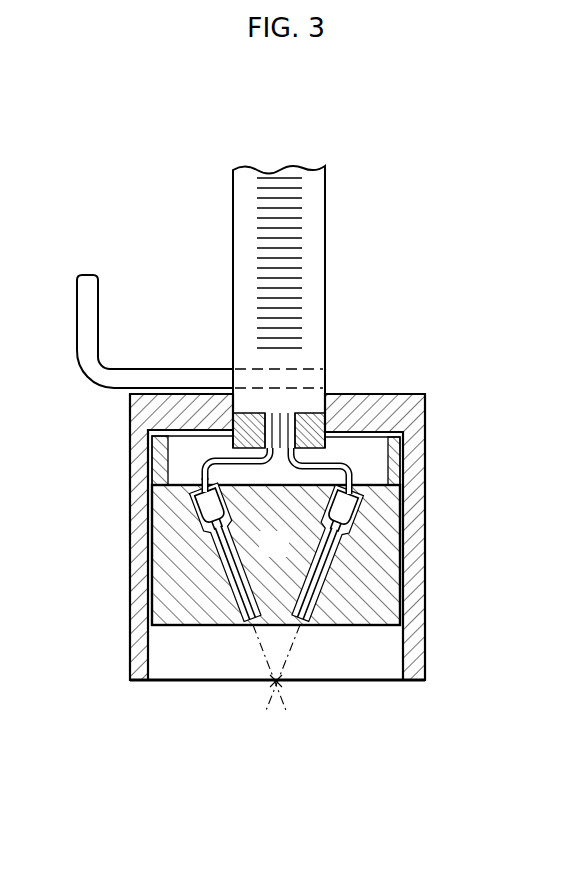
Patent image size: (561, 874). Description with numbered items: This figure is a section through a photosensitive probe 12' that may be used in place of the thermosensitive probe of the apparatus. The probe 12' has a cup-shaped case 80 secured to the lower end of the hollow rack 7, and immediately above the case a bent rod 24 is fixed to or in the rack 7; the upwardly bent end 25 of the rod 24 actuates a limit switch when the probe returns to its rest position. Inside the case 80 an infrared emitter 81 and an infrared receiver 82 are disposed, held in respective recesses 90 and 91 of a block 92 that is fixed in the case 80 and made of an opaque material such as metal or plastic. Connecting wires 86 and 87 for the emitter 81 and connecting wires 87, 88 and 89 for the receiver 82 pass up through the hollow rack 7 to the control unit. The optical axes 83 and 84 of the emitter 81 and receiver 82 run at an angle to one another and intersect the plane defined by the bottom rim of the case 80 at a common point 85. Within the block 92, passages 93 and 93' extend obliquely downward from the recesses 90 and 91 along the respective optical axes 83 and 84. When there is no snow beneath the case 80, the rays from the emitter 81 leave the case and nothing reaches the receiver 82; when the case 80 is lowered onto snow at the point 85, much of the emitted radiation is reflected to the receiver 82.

The rack 7 is at (313, 235).
The bent rod 24 is at (88, 378).
The upwardly bent end 25 is at (83, 309).
The probe 12' is at (308, 548).
The cup-shaped case 80 is at (416, 607).
The infrared emitter 81 is at (214, 511).
The infrared receiver 82 is at (356, 512).
The optical axis 83 is at (228, 577).
The optical axis 84 is at (292, 641).
The common point 85 is at (273, 684).
The connecting wire 86 is at (158, 460).
The connecting wire 87 is at (167, 476).
The connecting wire 88 is at (333, 469).
The connecting wire 89 is at (358, 468).
The recess 90 is at (197, 494).
The recess 91 is at (365, 493).
The block 92 is at (262, 554).
The passage 93 is at (171, 553).
The passage 93' is at (383, 554).